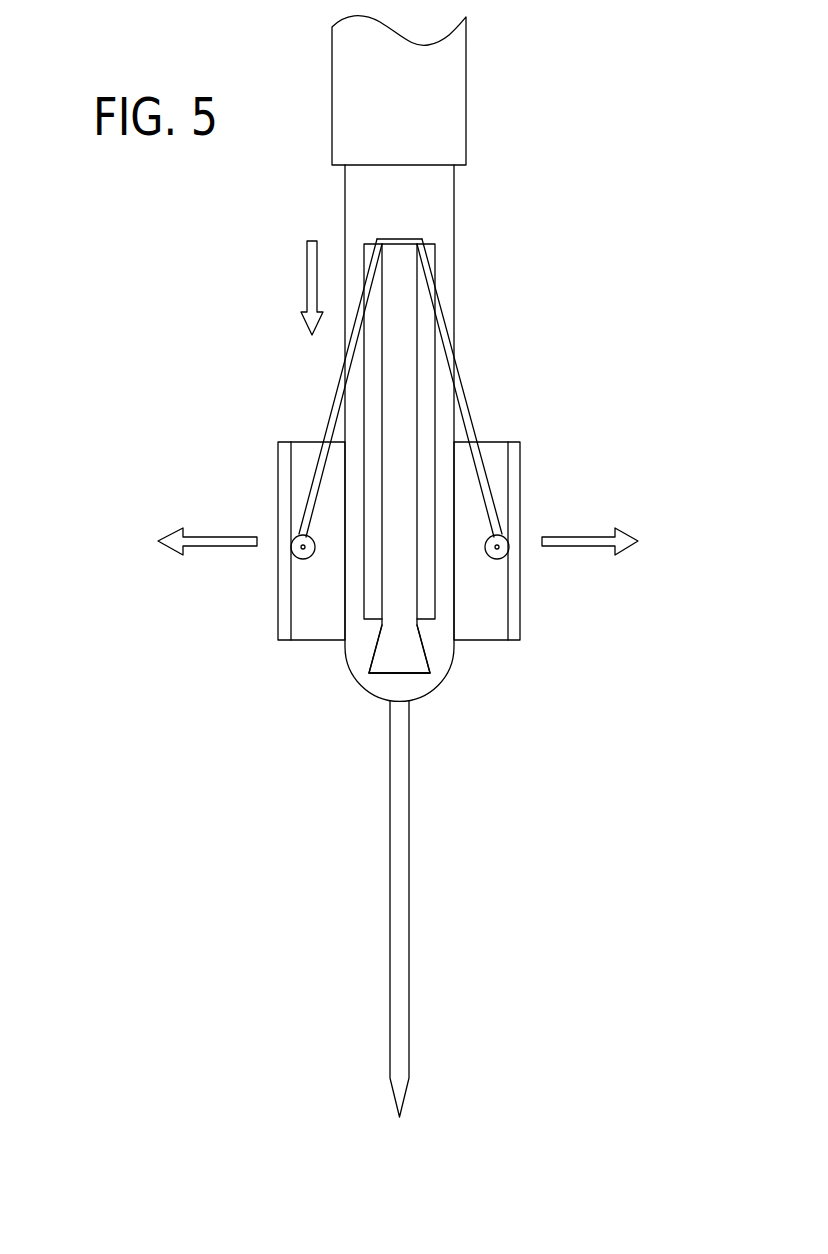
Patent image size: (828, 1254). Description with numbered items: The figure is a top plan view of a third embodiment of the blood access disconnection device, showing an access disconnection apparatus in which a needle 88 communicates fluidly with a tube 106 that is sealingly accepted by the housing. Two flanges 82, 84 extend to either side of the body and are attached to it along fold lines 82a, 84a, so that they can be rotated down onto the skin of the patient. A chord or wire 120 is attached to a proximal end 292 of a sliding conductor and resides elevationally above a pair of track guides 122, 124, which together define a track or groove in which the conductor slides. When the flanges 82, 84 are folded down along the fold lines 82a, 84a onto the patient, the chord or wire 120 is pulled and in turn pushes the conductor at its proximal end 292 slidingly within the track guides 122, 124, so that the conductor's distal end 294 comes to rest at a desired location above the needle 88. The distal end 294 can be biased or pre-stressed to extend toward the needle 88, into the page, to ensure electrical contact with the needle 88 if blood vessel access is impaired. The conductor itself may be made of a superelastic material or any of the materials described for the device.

The tube 106 is at (416, 117).
The proximal end 292 is at (396, 262).
The chord or wire 120 is at (342, 378).
The flange 82 is at (278, 490).
The fold line 82a is at (290, 442).
The flange 84 is at (522, 477).
The second slider block slot 84a is at (507, 442).
The track guide 122 is at (372, 632).
The track guide 124 is at (423, 624).
The distal end 294 is at (413, 676).
The needle 88 is at (409, 1000).